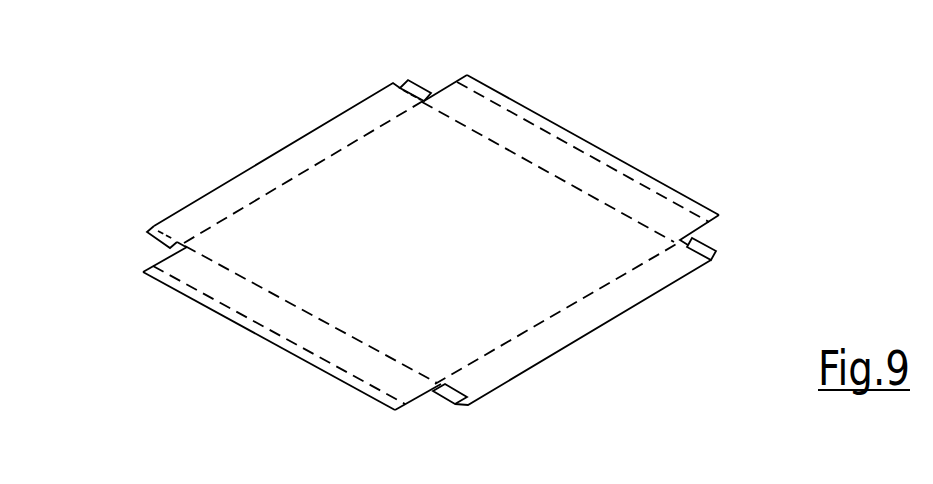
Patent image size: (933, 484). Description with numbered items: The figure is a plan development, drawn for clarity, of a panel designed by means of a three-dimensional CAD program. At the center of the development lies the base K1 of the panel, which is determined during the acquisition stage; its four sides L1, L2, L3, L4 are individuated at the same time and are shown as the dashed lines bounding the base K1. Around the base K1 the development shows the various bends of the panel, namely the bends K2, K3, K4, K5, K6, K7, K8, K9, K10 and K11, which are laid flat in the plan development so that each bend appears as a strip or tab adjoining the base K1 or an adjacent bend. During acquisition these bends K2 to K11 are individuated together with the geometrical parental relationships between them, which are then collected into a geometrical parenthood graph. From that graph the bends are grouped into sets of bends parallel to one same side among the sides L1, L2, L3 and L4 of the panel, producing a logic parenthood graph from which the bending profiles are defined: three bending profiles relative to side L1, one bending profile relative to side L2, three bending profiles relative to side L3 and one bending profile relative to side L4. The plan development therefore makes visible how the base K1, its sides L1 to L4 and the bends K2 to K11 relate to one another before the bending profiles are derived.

The base K1 is at (422, 243).
The bend K2 is at (570, 158).
The bend K3 is at (637, 168).
The bend K4 is at (706, 247).
The bend K5 is at (573, 323).
The bend K6 is at (453, 405).
The bend K7 is at (292, 330).
The bend K8 is at (212, 312).
The bend K9 is at (147, 233).
The bend K10 is at (288, 165).
The bend K11 is at (408, 79).
The side L1 is at (293, 304).
The side L2 is at (323, 167).
The side L3 is at (570, 185).
The side L4 is at (568, 306).